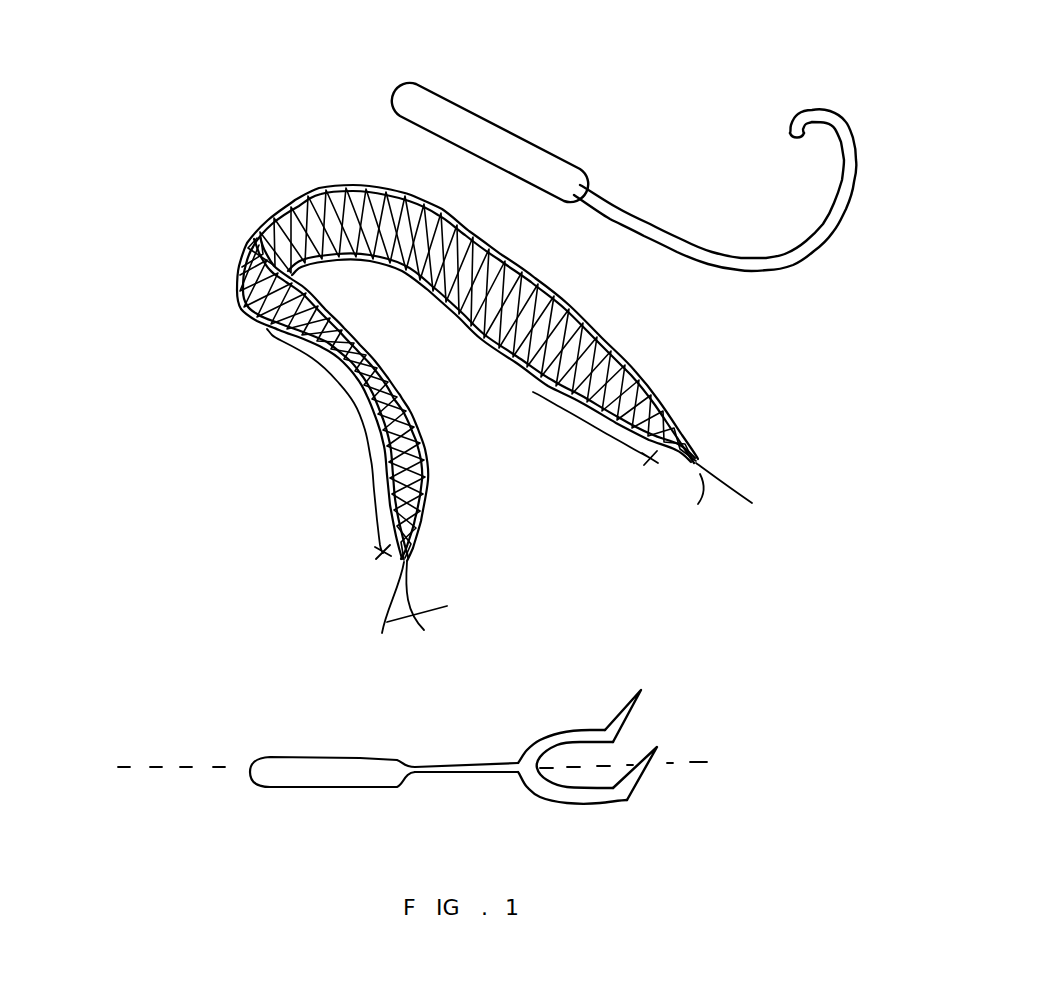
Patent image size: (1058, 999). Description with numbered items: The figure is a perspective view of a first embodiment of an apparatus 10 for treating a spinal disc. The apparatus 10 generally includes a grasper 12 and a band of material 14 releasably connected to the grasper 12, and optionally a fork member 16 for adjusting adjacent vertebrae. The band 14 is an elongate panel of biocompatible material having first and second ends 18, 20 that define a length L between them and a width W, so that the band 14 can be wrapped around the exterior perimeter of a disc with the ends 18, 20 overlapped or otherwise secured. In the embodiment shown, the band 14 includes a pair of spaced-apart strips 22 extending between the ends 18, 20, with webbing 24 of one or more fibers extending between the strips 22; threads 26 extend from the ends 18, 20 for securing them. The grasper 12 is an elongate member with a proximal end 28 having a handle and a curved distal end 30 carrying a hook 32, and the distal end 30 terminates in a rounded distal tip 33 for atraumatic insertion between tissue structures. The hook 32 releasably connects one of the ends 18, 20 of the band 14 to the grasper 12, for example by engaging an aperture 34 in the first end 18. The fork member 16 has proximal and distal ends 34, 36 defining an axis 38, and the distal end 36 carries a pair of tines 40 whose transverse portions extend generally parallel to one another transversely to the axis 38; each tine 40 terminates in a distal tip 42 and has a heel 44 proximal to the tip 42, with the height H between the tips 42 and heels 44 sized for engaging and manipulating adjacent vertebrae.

The apparatus 10 is at (152, 442).
The grasper 12 is at (592, 103).
The band of material 14 is at (226, 274).
The fork member 16 is at (436, 748).
The first end 18 is at (412, 538).
The second end 20 is at (683, 437).
The strips 22 is at (597, 316).
The webbing 24 is at (490, 303).
The threads 26 is at (405, 601).
The proximal end 28 is at (480, 110).
The distal end 30 is at (800, 262).
The hook 32 is at (790, 131).
The distal tip 33 is at (790, 109).
The aperture 34 is at (415, 515).
The distal end 36 is at (557, 805).
The axis 38 is at (190, 773).
The tines 40 is at (577, 732).
The distal tip 42 is at (642, 690).
The heel 44 is at (613, 740).